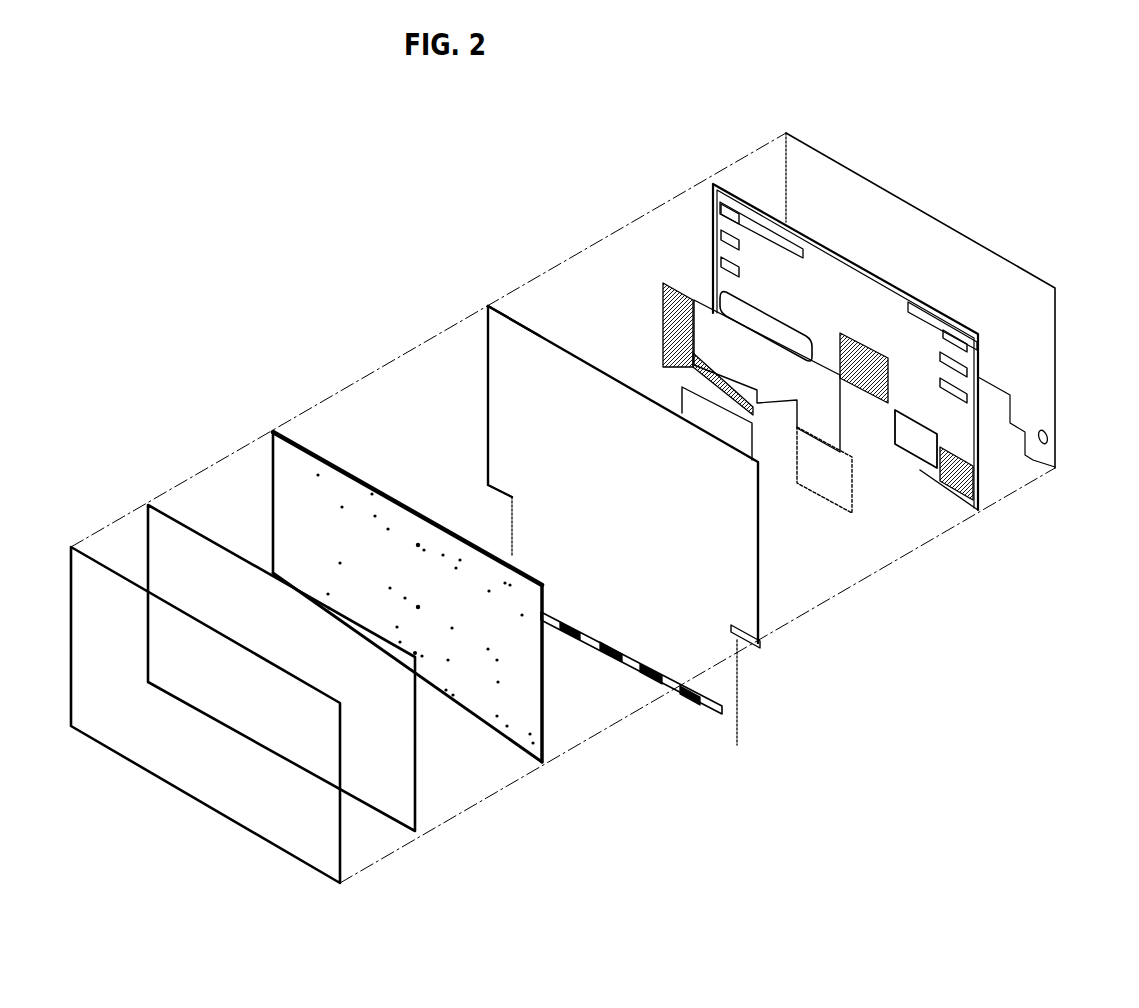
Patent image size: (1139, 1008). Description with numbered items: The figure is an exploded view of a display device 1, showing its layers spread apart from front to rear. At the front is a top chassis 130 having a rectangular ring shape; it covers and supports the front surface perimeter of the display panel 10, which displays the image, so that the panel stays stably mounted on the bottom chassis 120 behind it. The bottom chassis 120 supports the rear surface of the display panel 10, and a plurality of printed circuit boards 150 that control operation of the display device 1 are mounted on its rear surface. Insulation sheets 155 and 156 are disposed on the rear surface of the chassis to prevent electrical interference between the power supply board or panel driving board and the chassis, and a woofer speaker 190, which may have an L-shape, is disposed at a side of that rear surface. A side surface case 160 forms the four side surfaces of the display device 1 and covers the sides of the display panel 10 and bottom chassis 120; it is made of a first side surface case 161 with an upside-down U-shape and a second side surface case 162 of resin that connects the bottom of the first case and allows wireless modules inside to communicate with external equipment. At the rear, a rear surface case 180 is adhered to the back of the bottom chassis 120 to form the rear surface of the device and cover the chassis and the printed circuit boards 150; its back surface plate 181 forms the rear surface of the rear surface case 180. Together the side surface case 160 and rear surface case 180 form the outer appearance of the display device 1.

The display device 1 is at (335, 333).
The display panel 10 is at (420, 823).
The bottom chassis 120 is at (550, 771).
The top chassis 130 is at (345, 866).
The printed circuit boards 150 is at (864, 520).
The insulation sheet 155 is at (707, 297).
The insulation sheet 156 is at (770, 307).
The side surface case 160 is at (768, 618).
The first side surface case 161 is at (520, 317).
The second side surface case 162 is at (686, 712).
The rear surface case 180 is at (1012, 502).
The back surface plate 181 is at (1057, 380).
The woofer speaker 190 is at (662, 286).